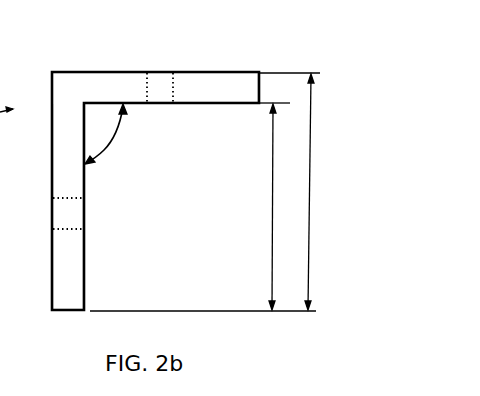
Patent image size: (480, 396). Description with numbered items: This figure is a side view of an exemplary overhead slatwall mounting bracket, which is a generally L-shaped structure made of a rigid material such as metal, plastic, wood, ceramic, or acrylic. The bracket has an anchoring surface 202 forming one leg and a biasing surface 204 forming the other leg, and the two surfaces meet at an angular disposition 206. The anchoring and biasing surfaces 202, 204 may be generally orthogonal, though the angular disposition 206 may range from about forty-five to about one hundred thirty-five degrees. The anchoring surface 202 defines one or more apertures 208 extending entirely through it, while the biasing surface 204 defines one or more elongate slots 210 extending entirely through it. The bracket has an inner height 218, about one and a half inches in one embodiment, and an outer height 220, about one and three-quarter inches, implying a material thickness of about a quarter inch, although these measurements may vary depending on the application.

The anchoring surface 202 is at (205, 79).
The biasing surface 204 is at (70, 280).
The angular disposition 206 is at (112, 144).
The apertures 208 is at (146, 90).
The elongate slots 210 is at (80, 226).
The inner height 218 is at (272, 156).
The outer height 220 is at (310, 178).